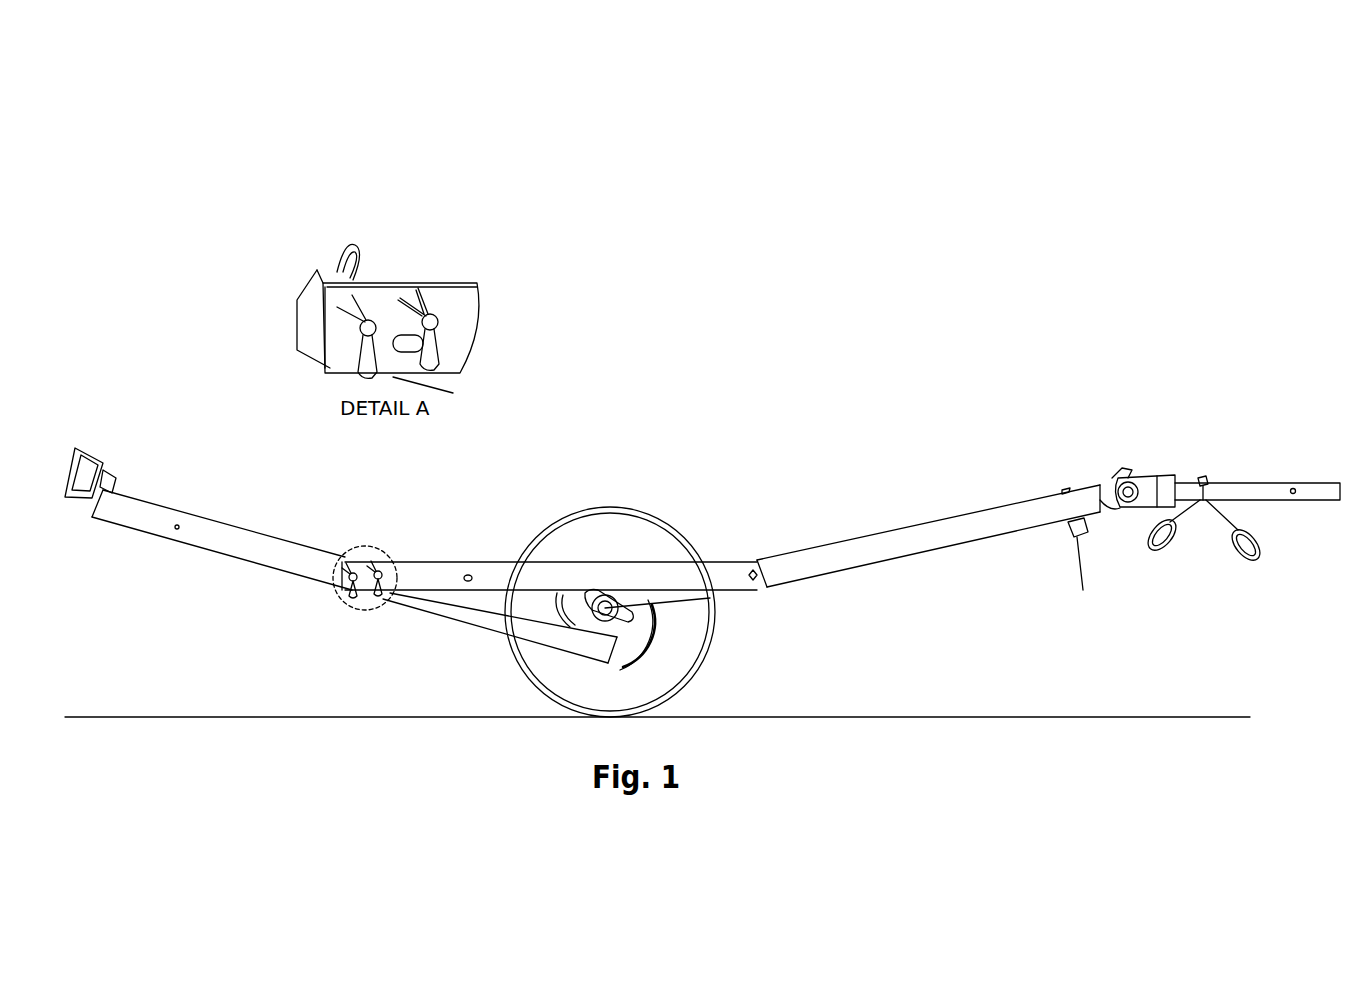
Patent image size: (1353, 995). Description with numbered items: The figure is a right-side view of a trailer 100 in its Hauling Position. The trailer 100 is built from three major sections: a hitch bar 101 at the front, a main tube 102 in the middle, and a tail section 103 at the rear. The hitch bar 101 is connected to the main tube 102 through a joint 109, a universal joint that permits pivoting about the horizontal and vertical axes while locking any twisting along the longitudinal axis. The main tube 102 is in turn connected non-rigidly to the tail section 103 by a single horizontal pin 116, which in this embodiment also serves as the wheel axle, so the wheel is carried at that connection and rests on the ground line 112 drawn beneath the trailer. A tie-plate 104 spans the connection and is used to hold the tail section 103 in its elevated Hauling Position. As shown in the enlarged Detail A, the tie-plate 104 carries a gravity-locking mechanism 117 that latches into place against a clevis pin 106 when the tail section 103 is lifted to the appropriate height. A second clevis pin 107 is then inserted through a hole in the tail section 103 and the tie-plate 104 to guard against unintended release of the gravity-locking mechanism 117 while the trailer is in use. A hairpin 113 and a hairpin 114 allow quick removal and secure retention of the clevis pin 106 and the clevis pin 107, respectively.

The trailer 100 is at (800, 403).
The hitch bar 101 is at (1240, 490).
The main tube 102 is at (857, 540).
The tail section 103 is at (270, 553).
The tie-plate 104 is at (582, 577).
The clevis pin 106 is at (360, 603).
The clevis pin 107 is at (337, 590).
The joint 109 is at (1122, 480).
The ground surface 112 is at (1002, 715).
The hairpin 113 is at (427, 288).
The hairpin 114 is at (370, 284).
The pin 116 is at (650, 620).
The gravity-locking mechanism 117 is at (757, 562).